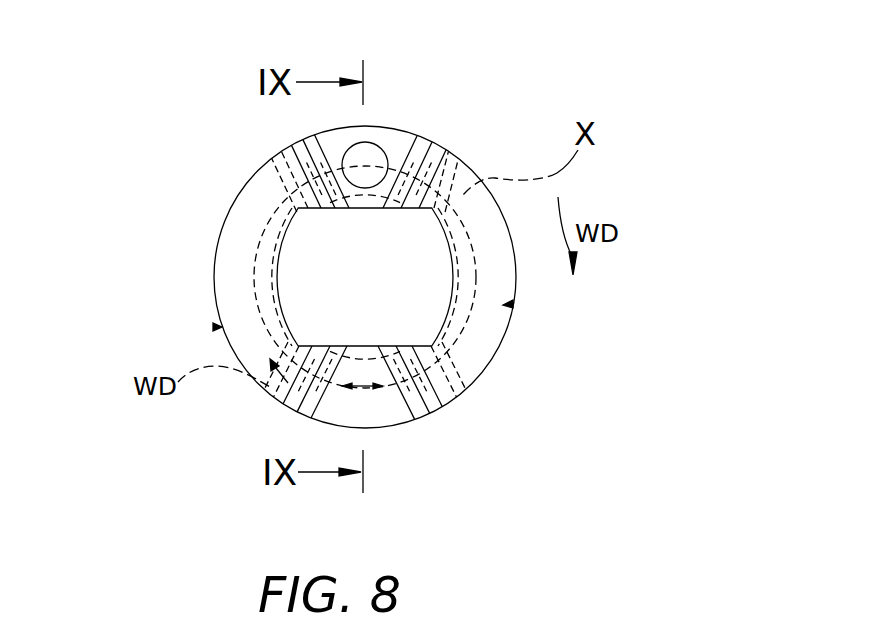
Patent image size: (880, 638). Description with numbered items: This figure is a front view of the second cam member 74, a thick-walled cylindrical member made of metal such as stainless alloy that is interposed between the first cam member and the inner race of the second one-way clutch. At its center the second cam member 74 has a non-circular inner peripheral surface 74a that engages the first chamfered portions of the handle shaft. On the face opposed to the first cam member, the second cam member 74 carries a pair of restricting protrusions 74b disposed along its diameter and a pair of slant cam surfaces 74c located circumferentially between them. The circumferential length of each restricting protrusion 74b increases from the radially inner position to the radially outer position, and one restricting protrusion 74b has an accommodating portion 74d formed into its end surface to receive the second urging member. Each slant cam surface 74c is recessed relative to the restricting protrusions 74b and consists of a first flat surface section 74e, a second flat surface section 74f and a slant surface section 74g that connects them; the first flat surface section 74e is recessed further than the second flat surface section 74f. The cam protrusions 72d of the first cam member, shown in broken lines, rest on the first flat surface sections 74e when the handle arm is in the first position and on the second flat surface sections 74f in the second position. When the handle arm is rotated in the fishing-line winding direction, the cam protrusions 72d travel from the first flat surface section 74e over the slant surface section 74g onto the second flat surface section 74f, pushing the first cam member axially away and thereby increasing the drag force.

The second cam member 74 is at (492, 109).
The non-circular inner peripheral surface 74a is at (360, 208).
The restricting protrusion 74b is at (322, 151).
The slant cam surface 74c is at (214, 327).
The accommodating portion 74d is at (343, 152).
The first flat surface section 74e is at (408, 168).
The second flat surface section 74f is at (308, 163).
The slant surface section 74g is at (232, 272).
The cam protrusion 72d is at (460, 198).